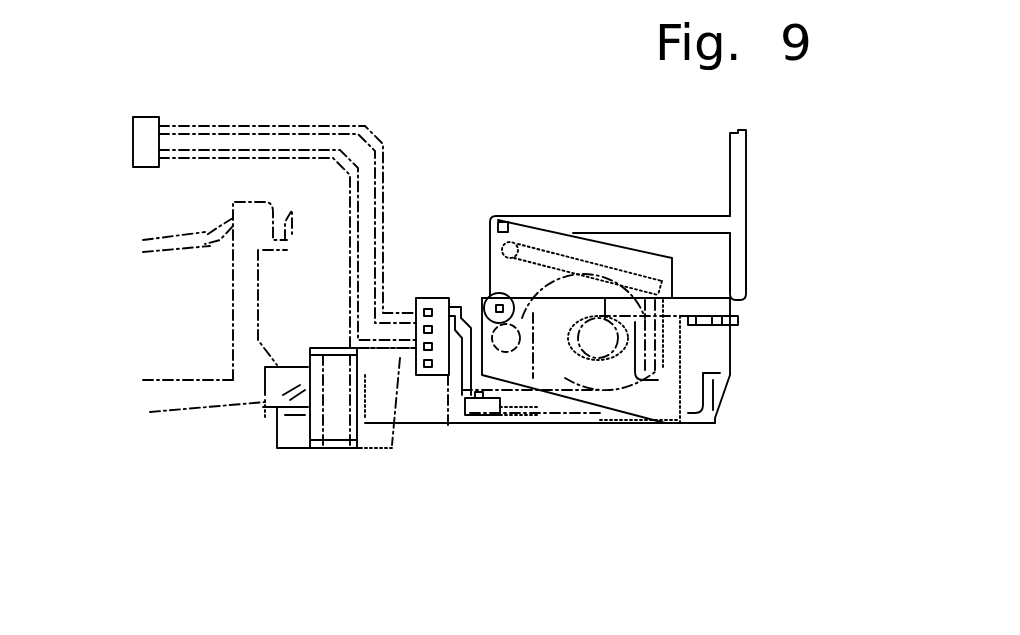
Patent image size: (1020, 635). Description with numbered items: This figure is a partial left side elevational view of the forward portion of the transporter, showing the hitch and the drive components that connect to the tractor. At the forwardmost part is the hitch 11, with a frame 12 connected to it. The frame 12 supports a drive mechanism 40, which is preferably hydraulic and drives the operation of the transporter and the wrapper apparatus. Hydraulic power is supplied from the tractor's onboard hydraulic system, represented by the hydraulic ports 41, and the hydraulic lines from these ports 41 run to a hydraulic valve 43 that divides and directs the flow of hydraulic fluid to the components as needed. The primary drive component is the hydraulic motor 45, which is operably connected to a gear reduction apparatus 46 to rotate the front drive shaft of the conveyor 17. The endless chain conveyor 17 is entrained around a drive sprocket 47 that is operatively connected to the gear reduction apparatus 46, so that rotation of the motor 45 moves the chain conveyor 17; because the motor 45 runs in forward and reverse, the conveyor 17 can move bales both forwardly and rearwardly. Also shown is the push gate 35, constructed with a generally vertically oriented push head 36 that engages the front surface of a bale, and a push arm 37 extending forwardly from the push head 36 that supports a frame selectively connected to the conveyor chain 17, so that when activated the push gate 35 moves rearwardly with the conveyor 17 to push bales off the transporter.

The hitch 11 is at (295, 448).
The frame 12 is at (484, 423).
The chain conveyor 17 is at (738, 323).
The push gate 35 is at (746, 190).
The push head 36 is at (746, 257).
The push arm 37 is at (670, 217).
The drive mechanism 40 is at (505, 121).
The hydraulic ports 41 is at (138, 117).
The hydraulic valve 43 is at (431, 375).
The hydraulic motor 45 is at (495, 293).
The gear reduction apparatus 46 is at (643, 378).
The drive sprocket 47 is at (595, 360).